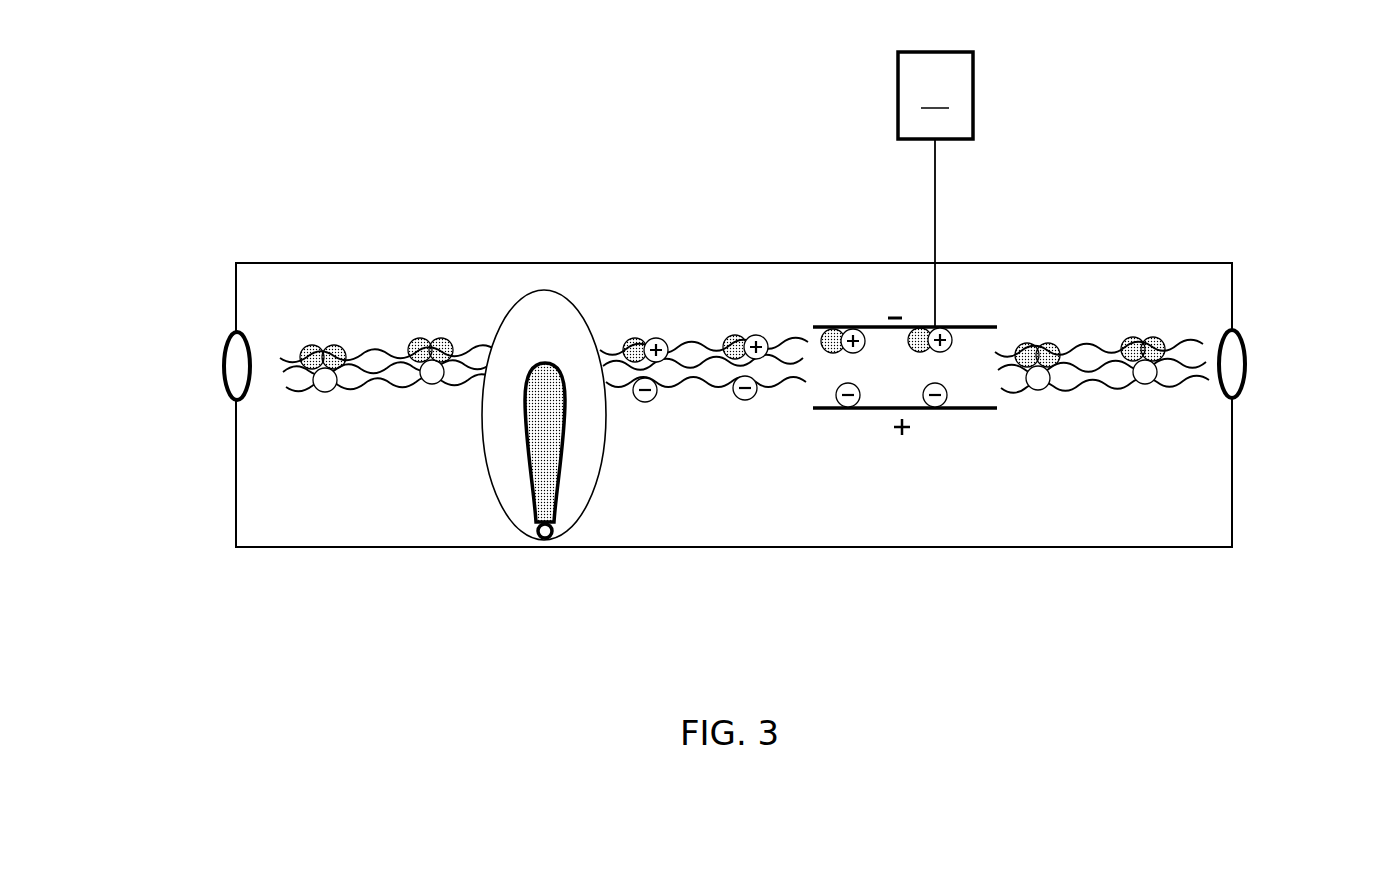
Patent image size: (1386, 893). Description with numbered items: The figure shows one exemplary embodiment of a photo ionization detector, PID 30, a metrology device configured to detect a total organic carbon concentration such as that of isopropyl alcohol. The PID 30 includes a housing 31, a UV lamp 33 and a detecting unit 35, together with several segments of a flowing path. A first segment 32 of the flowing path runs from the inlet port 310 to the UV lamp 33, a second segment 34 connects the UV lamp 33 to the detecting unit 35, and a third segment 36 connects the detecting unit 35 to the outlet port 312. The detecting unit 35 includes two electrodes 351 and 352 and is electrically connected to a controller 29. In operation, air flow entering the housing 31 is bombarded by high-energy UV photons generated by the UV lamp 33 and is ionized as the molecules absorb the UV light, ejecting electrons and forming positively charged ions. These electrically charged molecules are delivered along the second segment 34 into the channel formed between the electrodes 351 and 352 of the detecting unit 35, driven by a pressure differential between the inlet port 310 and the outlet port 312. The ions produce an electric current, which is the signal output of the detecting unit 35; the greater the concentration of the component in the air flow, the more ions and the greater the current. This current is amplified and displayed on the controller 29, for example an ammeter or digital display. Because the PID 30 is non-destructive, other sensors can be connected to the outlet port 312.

The controller 29 is at (935, 189).
The photo ionization detector 30 is at (275, 200).
The housing 31 is at (700, 263).
The inlet port 310 is at (223, 348).
The outlet port 312 is at (1247, 352).
The first segment 32 is at (388, 345).
The UV lamp 33 is at (552, 460).
The second segment 34 is at (780, 340).
The detecting unit 35 is at (931, 398).
The electrode 351 is at (963, 410).
The electrode 352 is at (982, 325).
The third segment 36 is at (1183, 345).